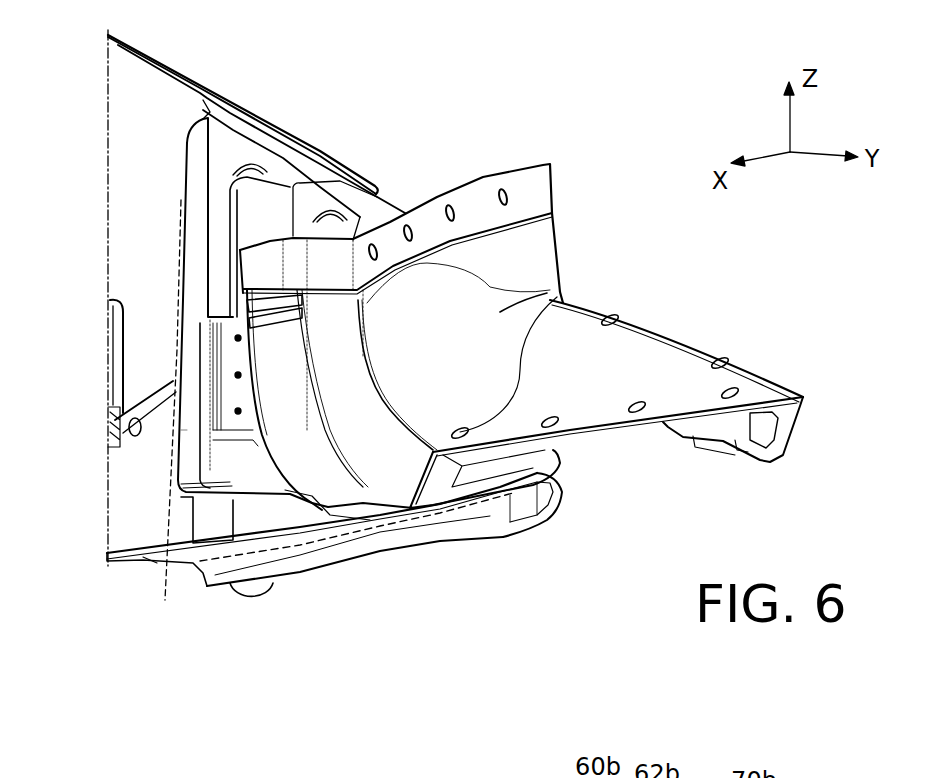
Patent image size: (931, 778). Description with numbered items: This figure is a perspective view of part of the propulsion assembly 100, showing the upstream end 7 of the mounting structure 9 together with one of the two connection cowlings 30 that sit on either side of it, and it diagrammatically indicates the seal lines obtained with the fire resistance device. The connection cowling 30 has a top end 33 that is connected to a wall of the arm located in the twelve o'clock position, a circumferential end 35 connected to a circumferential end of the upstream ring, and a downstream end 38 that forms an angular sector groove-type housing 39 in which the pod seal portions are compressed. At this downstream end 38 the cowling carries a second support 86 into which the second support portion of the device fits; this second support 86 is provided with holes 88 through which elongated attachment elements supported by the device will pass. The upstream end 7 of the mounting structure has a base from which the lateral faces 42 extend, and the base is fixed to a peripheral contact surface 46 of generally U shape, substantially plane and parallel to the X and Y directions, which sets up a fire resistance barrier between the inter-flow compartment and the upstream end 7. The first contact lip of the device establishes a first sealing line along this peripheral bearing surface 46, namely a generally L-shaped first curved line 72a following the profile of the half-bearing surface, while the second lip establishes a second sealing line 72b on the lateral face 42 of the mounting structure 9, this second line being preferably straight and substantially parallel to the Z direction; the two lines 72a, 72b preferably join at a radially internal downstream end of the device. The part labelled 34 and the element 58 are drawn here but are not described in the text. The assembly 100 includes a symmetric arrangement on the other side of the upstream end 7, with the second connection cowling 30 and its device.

The mounting structure 9 is at (212, 70).
The upstream end of the mounting structure 7 is at (262, 124).
The lateral face of the mounting structure 42 is at (140, 187).
The propulsion assembly 100 is at (599, 188).
The top end of the connection cowling 33 is at (480, 203).
The side panel 34 is at (550, 284).
The connection cowling 30 is at (625, 353).
The holes 88 is at (242, 375).
The second sealing line 72b is at (177, 350).
The seal housing 39 is at (282, 453).
The second support 86 is at (233, 397).
The downstream end of the connection cowling 38 is at (332, 487).
The first curved line 72a is at (440, 517).
The peripheral contact surface 46 is at (527, 530).
The bracket 58 is at (553, 457).
The circumferential end of the connection cowling 35 is at (663, 427).